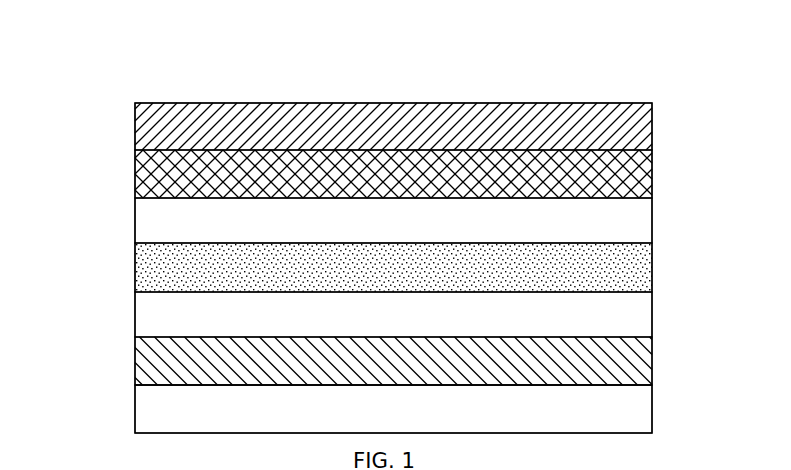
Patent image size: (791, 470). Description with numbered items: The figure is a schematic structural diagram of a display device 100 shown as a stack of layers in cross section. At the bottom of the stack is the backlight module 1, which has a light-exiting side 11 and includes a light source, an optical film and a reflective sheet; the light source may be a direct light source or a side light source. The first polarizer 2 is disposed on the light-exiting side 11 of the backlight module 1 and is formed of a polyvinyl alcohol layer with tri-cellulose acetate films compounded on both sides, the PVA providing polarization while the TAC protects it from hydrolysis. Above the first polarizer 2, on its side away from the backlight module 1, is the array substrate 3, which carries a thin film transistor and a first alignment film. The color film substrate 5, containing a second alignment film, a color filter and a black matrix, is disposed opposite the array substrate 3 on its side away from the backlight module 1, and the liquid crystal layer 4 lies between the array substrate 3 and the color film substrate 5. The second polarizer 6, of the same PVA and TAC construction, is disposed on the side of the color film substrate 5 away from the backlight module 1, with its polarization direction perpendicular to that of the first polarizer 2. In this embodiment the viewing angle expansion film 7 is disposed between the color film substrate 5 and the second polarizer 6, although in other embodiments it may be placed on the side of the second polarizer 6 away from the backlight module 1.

The display device 100 is at (135, 78).
The backlight module 1 is at (426, 394).
The first polarizer 2 is at (426, 347).
The array substrate 3 is at (426, 299).
The liquid crystal layer 4 is at (426, 254).
The color film substrate 5 is at (426, 206).
The second polarizer 6 is at (426, 112).
The viewing angle expansion film 7 is at (426, 159).
The light-exiting side 11 is at (352, 333).